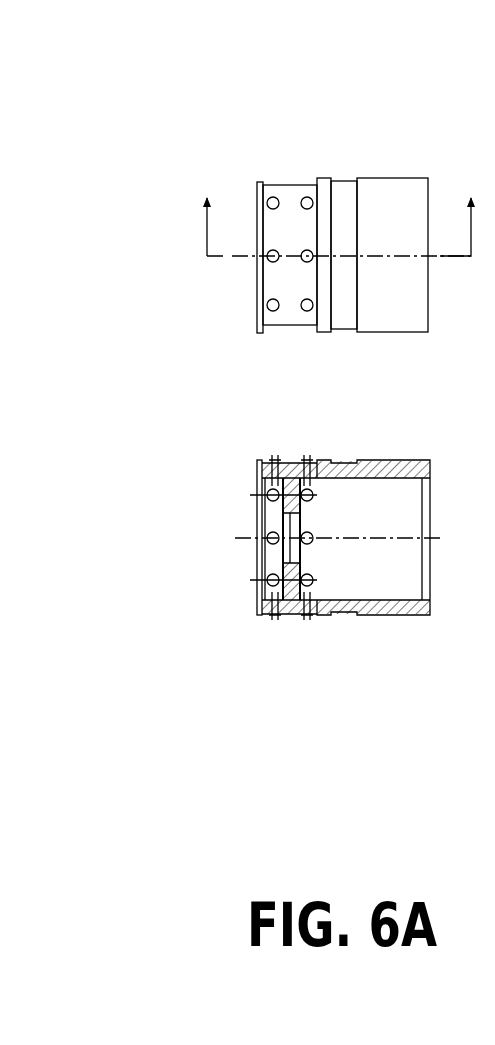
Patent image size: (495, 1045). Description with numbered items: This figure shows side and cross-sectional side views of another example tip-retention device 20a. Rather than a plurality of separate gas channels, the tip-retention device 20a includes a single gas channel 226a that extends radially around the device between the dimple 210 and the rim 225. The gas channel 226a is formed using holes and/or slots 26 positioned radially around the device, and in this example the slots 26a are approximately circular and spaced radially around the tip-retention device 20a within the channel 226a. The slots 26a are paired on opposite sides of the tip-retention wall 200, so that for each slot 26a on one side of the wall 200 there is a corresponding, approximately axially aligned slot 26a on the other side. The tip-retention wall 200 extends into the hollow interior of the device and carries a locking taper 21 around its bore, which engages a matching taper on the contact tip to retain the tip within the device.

The tip-retention device 20a is at (393, 175).
The dimple 210 is at (342, 170).
The gas channel 226a is at (293, 176).
The slots 26a is at (262, 242).
The rim 225 is at (256, 296).
The holes and/or slots 26 is at (276, 466).
The tip-retention wall 200 is at (262, 497).
The locking taper 21 is at (288, 610).